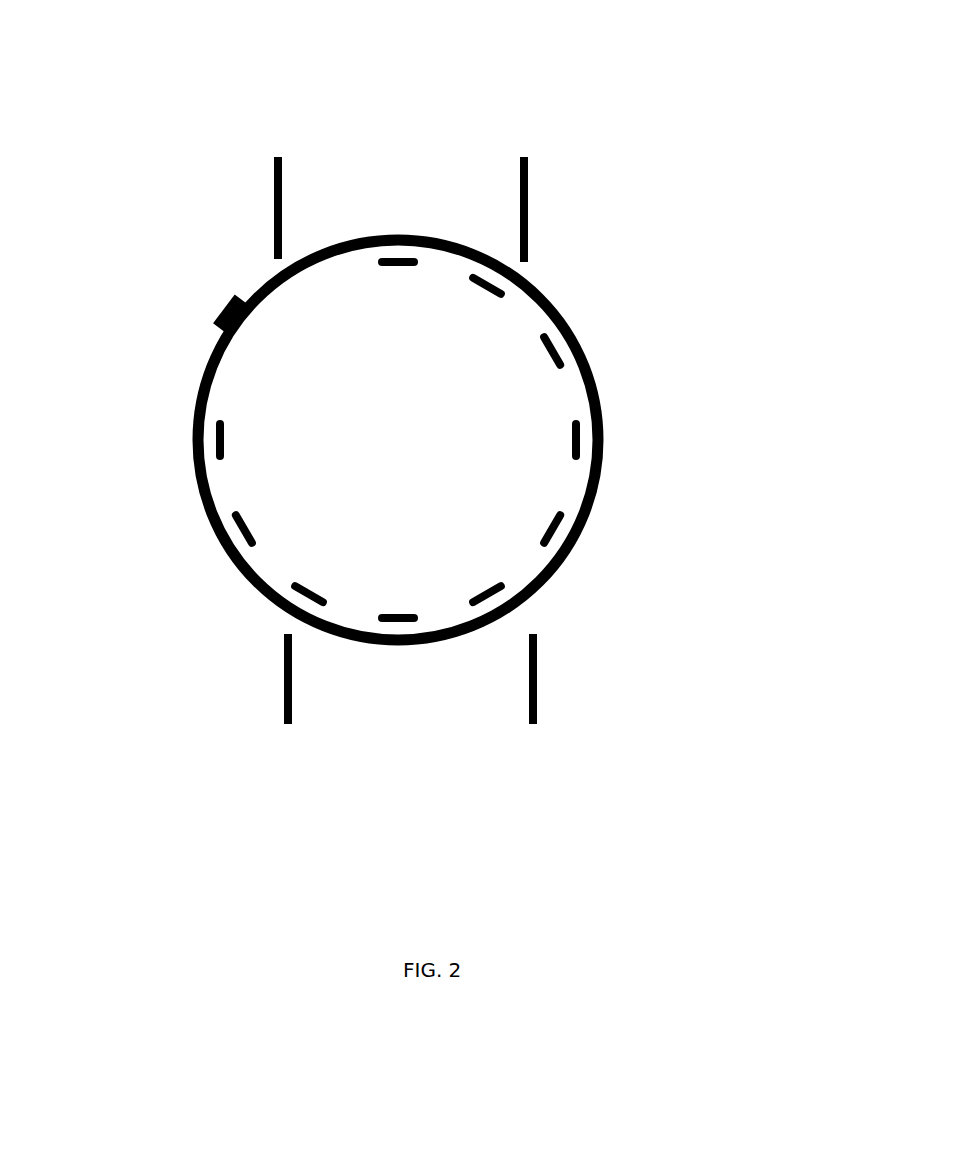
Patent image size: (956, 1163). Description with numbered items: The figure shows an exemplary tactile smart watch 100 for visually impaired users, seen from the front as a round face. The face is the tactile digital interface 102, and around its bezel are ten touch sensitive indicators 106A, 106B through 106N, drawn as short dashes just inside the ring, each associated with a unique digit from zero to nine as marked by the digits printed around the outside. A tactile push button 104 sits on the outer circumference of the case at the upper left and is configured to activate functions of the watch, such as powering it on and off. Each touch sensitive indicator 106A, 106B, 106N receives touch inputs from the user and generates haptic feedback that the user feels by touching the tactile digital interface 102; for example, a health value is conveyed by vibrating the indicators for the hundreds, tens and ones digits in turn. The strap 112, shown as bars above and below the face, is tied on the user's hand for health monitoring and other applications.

The tactile smart watch 100 is at (728, 86).
The tactile digital interface 102 is at (325, 435).
The tactile push button 104 is at (218, 309).
The touch sensitive indicator 106A is at (399, 256).
The touch sensitive indicator 106B is at (495, 284).
The touch sensitive indicator 106N is at (240, 524).
The strap 112 is at (537, 708).